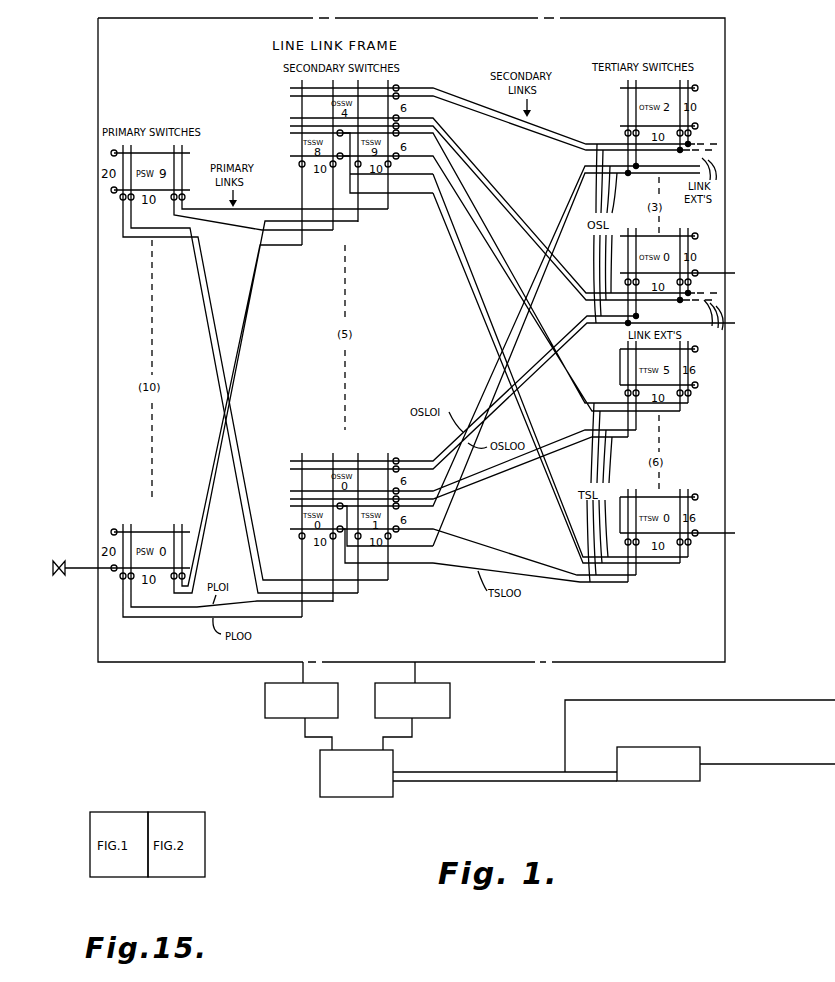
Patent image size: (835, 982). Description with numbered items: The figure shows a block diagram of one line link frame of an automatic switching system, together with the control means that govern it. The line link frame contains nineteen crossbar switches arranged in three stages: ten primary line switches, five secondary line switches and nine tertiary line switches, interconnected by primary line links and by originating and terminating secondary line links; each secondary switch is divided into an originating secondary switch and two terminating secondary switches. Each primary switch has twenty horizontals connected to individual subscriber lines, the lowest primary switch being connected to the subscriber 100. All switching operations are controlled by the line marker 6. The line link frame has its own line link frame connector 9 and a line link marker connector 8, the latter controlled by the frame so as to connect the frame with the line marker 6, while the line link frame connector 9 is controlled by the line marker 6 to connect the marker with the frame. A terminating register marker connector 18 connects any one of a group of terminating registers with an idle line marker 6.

The subscriber 100 is at (67, 563).
The line link marker connector 8 is at (336, 718).
The line link frame connector 9 is at (448, 718).
The line marker 6 is at (391, 797).
The terminating register marker connector 18 is at (655, 781).